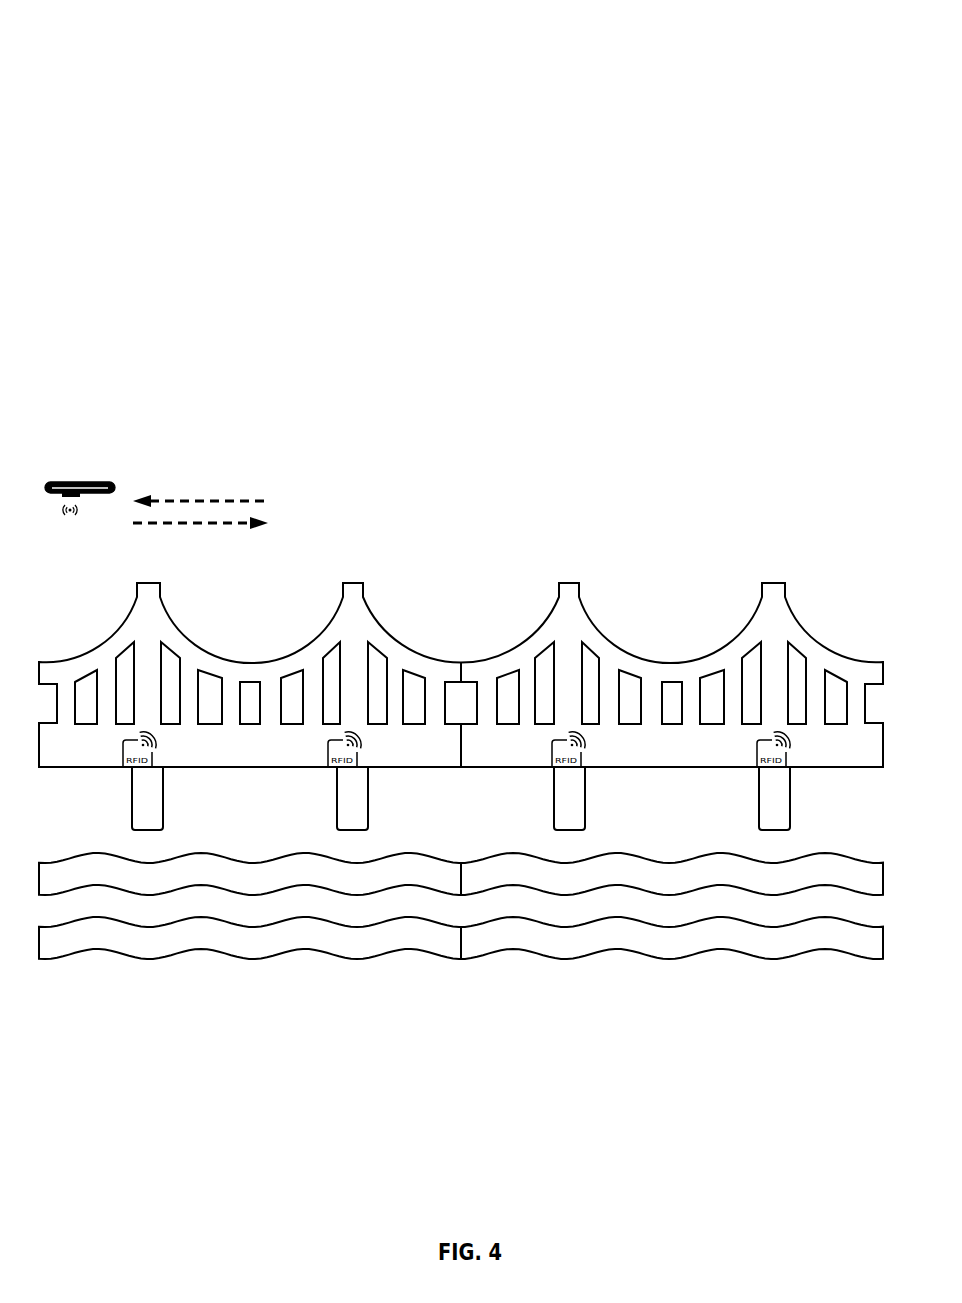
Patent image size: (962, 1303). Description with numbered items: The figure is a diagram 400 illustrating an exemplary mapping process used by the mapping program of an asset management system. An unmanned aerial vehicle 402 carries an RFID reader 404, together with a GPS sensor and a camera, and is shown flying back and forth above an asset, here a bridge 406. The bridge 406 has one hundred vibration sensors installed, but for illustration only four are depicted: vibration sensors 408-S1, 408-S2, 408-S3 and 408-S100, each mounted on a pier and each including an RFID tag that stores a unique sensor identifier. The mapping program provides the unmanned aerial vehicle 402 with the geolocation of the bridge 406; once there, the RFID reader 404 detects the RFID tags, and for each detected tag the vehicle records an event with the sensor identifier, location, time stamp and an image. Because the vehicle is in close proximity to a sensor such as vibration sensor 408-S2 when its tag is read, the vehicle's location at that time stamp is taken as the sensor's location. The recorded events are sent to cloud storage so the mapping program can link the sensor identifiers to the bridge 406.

The diagram 400 is at (134, 65).
The unmanned aerial vehicle 402 is at (88, 470).
The RFID reader 404 is at (58, 498).
The bridge 406 is at (254, 645).
The vibration sensor 408-S1 is at (126, 742).
The vibration sensor 408-S2 is at (331, 742).
The vibration sensor 408-S3 is at (553, 742).
The vibration sensor 408-S100 is at (774, 768).